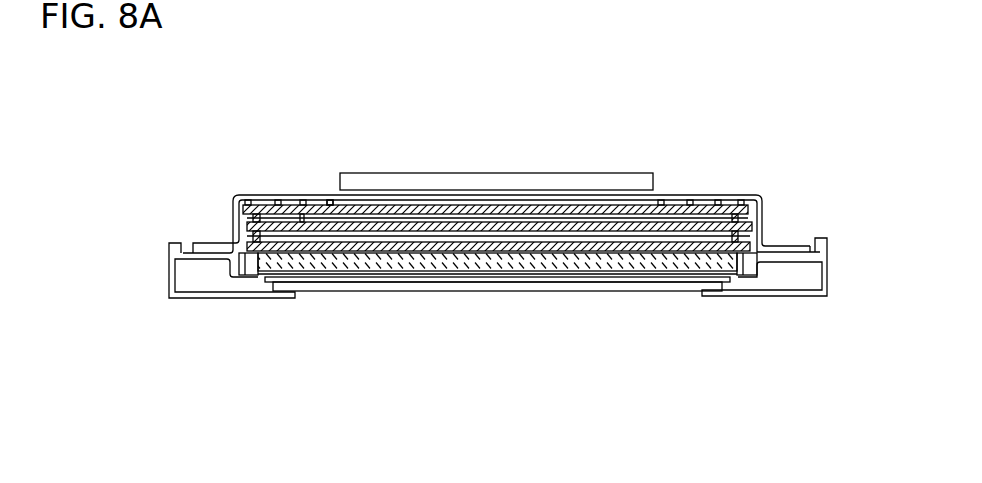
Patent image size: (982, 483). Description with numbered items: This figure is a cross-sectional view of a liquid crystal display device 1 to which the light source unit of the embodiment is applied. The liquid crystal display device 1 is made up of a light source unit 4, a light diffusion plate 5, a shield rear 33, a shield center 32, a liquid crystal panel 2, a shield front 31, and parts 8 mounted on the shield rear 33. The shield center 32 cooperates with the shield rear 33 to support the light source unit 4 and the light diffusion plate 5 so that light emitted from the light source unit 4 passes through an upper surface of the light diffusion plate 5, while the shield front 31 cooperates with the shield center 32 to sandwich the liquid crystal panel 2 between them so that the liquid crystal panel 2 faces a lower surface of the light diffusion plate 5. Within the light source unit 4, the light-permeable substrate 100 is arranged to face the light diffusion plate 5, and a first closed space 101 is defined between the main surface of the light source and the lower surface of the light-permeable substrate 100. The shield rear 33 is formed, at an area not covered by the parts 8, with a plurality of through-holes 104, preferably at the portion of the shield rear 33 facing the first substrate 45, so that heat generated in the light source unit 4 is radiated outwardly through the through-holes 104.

The liquid crystal display device 1 is at (498, 233).
The liquid crystal panel 2 is at (448, 280).
The light source unit 4 is at (300, 220).
The first substrate 45 is at (327, 203).
The light diffusion plate 5 is at (658, 251).
The parts 8 is at (487, 190).
The shield front 31 is at (210, 298).
The shield center 32 is at (760, 262).
The shield rear 33 is at (760, 238).
The light-permeable substrate 100 is at (668, 251).
The first closed space 101 is at (343, 237).
The through-holes 104 is at (688, 197).